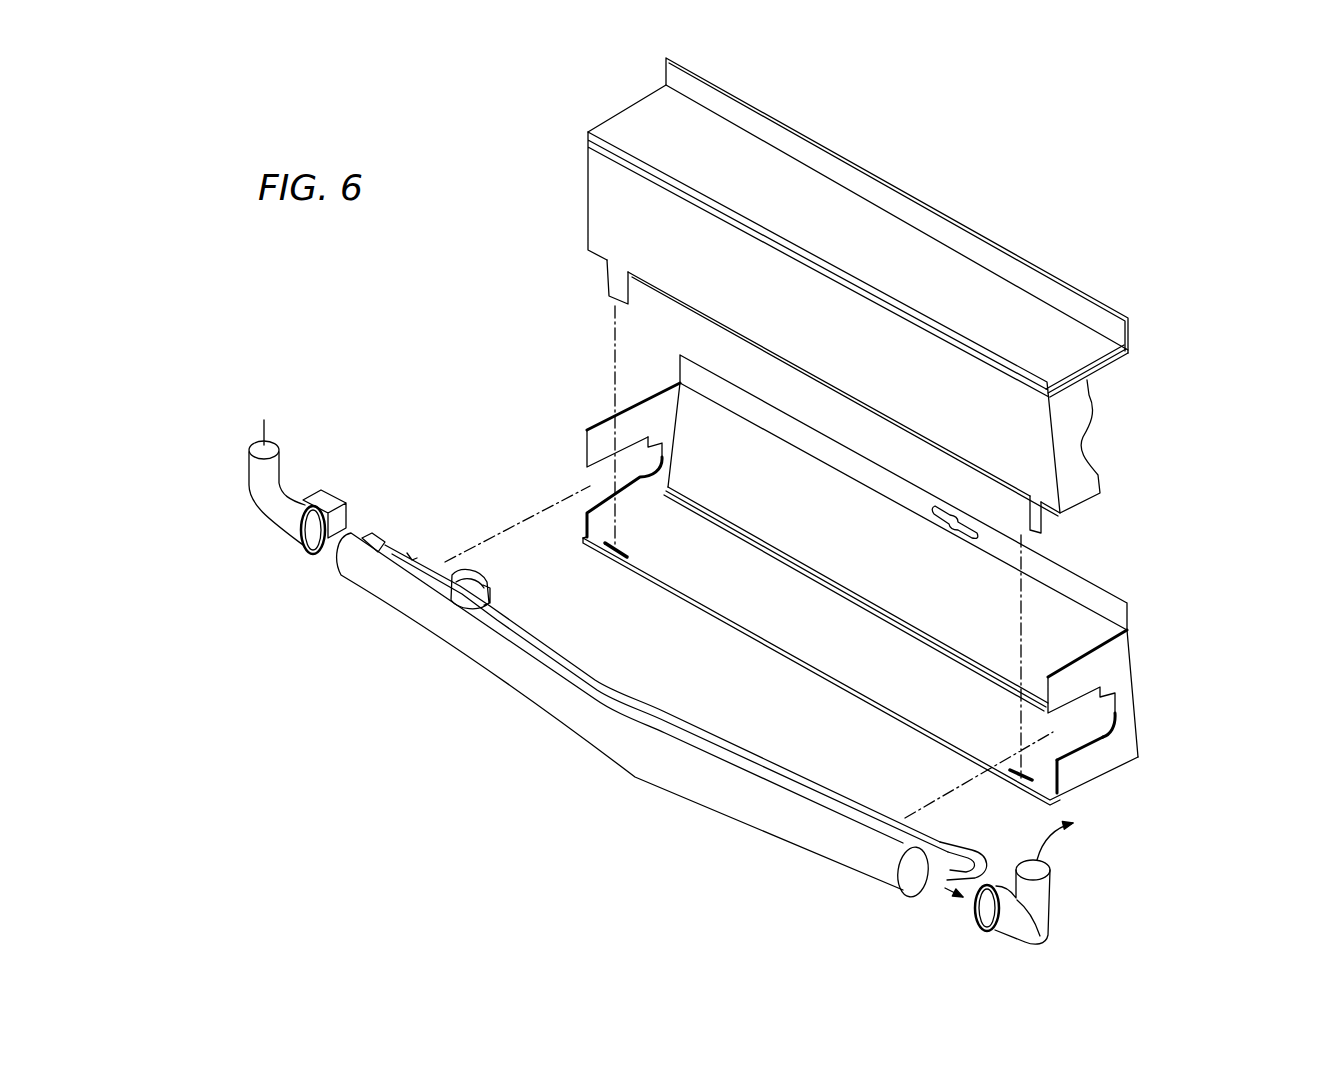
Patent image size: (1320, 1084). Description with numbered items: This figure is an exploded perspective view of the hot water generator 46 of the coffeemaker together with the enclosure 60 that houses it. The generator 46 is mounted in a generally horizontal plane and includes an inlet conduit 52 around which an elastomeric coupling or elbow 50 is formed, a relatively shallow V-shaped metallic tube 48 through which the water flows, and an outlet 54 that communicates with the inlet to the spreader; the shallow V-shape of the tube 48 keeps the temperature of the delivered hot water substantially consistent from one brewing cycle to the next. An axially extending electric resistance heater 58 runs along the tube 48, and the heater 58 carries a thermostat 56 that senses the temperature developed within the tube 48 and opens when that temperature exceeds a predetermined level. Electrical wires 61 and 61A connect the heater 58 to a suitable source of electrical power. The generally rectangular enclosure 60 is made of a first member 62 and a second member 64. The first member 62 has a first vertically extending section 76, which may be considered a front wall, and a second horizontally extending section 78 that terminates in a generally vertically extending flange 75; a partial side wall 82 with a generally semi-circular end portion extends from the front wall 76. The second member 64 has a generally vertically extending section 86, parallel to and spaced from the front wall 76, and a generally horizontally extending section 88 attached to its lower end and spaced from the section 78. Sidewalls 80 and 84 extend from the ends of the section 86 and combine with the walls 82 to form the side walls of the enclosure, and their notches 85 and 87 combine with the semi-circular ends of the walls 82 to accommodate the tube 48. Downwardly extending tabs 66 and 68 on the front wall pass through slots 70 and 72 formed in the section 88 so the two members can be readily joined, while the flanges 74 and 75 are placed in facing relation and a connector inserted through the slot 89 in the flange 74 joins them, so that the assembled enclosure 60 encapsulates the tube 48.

The hot water generator 46 is at (651, 682).
The metallic tube 48 is at (635, 778).
The elbow 50 is at (286, 510).
The inlet conduit 52 is at (313, 550).
The outlet 54 is at (1013, 920).
The thermostat 56 is at (476, 583).
The electric resistance heater 58 is at (418, 563).
The enclosure 60 is at (853, 311).
The electrical wire 61 is at (363, 538).
The electrical wire 61A is at (830, 807).
The first member 62 is at (1083, 353).
The second member 64 is at (901, 576).
The tab 66 is at (1040, 530).
The tab 68 is at (613, 280).
The slot 70 is at (1012, 776).
The slot 72 is at (605, 549).
The flange 74 is at (737, 410).
The vertically extending flange 75 is at (1104, 318).
The first vertically extending section 76 is at (613, 204).
The second horizontally extending section 78 is at (643, 128).
The sidewall 80 is at (1123, 743).
The partial side wall 82 is at (1082, 441).
The sidewall 84 is at (652, 418).
The notch 85 is at (1068, 742).
The vertically extending section 86 is at (812, 503).
The notch 87 is at (637, 487).
The horizontally extending section 88 is at (797, 617).
The slot 89 is at (948, 510).